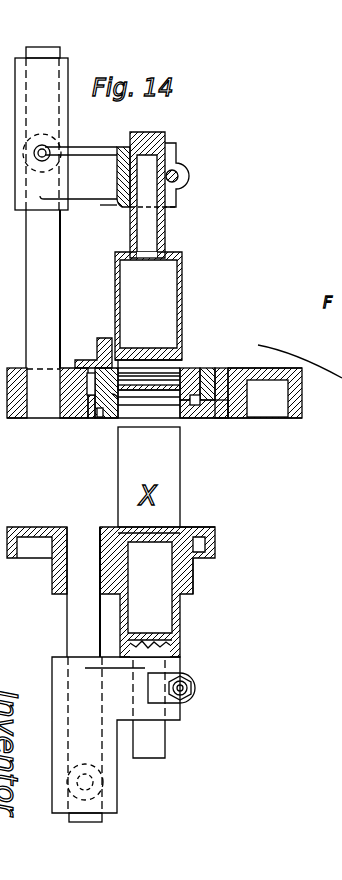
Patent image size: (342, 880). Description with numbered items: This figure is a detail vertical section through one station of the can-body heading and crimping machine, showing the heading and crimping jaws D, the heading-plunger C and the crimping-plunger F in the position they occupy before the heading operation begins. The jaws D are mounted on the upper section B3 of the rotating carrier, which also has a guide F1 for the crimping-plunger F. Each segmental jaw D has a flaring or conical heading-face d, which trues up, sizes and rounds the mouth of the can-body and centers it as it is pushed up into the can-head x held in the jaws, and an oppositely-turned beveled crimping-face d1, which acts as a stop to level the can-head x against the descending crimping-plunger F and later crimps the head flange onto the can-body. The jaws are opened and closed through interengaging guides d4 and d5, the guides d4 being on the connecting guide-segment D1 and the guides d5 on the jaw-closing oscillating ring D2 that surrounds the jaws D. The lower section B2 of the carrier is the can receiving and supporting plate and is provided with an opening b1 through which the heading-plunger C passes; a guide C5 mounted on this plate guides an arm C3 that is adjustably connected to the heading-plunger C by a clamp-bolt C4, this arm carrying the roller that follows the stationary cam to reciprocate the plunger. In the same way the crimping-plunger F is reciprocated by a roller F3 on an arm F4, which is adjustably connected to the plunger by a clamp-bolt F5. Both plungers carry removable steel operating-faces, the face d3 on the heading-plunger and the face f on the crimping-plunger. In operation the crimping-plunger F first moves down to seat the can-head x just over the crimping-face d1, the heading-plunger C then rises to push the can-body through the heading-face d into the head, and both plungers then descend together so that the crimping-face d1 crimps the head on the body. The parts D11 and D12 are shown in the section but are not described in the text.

The guide for crimping-plunger F1 is at (52, 321).
The roller F3 is at (50, 142).
The arm F4 is at (85, 177).
The crimping-plunger F is at (183, 295).
The clamp-bolt F5 is at (180, 168).
The step block D12 is at (92, 346).
The jaw-closing oscillating ring D2 is at (290, 433).
The heading-face d is at (107, 420).
The heading and crimping jaws D is at (172, 403).
The crimping-face d1 is at (177, 412).
The guide on guide-segment d4 is at (203, 397).
The guide on jaw-closing ring d5 is at (212, 392).
The upper section of carrier B3 is at (285, 351).
The connecting guide-segment D1 is at (200, 378).
The thin plate D11 is at (262, 368).
The removable steel operating-face f is at (168, 395).
The can-head x is at (162, 380).
The lower section of carrier B2 is at (35, 528).
The guide C5 is at (84, 670).
The heading-plunger C is at (182, 607).
The removable steel operating-face d3 is at (182, 530).
The guide or opening for heading-plunger b1 is at (192, 578).
The arm C3 is at (50, 660).
The clamp-bolt C4 is at (194, 690).